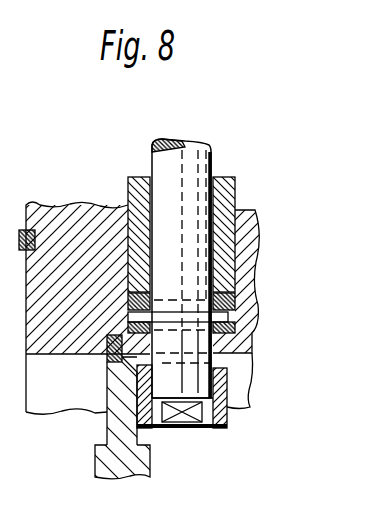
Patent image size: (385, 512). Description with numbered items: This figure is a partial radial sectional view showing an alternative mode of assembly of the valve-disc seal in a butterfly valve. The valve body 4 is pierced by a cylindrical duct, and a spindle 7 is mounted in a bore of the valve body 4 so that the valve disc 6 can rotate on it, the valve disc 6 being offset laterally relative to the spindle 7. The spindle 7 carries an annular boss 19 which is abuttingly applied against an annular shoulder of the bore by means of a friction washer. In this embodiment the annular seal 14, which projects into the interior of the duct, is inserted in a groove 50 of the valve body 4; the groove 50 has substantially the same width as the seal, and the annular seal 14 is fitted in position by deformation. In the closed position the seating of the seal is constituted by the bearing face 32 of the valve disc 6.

The valve body 4 is at (82, 237).
The spindle 7 is at (188, 178).
The annular boss 19 is at (232, 321).
The groove 50 is at (126, 333).
The annular seal 14 is at (108, 359).
The bearing face 32 is at (108, 385).
The valve disc 6 is at (120, 428).